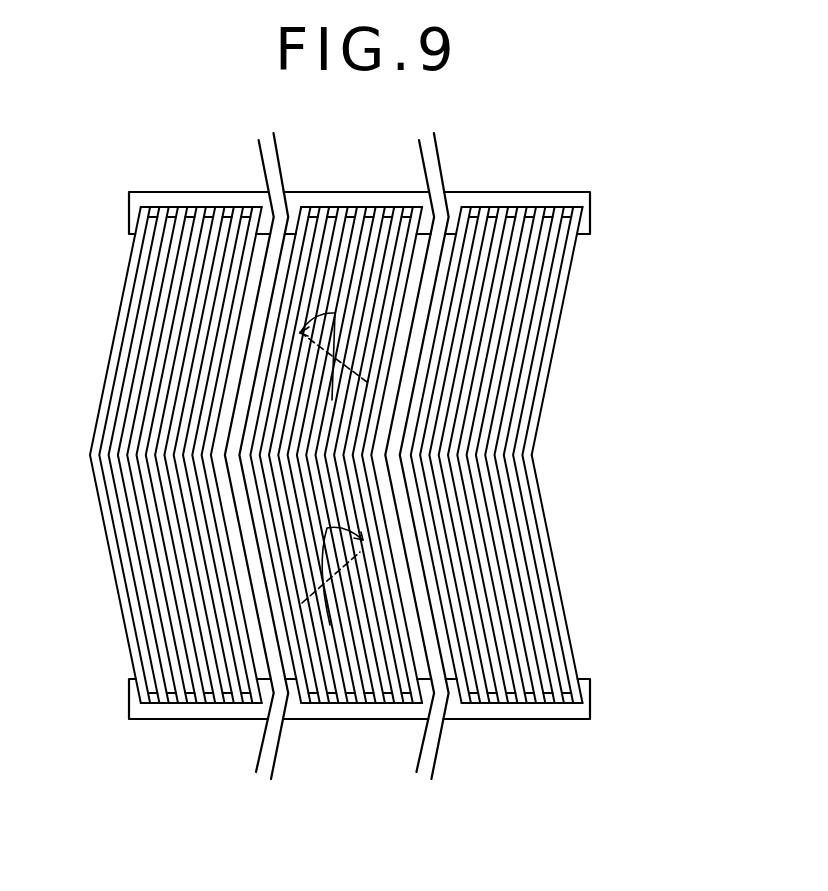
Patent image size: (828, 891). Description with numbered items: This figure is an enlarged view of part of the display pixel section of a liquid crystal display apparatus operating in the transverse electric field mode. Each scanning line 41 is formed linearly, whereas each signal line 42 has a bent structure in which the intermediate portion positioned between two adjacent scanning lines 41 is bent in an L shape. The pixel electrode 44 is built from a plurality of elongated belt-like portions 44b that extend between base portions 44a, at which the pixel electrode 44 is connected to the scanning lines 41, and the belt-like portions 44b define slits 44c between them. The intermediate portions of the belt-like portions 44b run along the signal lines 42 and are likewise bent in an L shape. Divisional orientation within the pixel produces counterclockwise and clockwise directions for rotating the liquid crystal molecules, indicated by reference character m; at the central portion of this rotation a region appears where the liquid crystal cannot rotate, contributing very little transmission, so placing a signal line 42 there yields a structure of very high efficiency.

The scanning line 41 is at (592, 210).
The signal line 42 is at (437, 150).
The pixel electrode 44 is at (554, 345).
The base portion 44a is at (518, 698).
The belt-like portion 44b is at (566, 622).
The slit 44c is at (551, 548).
The direction for rotating liquid crystal molecules m is at (336, 612).